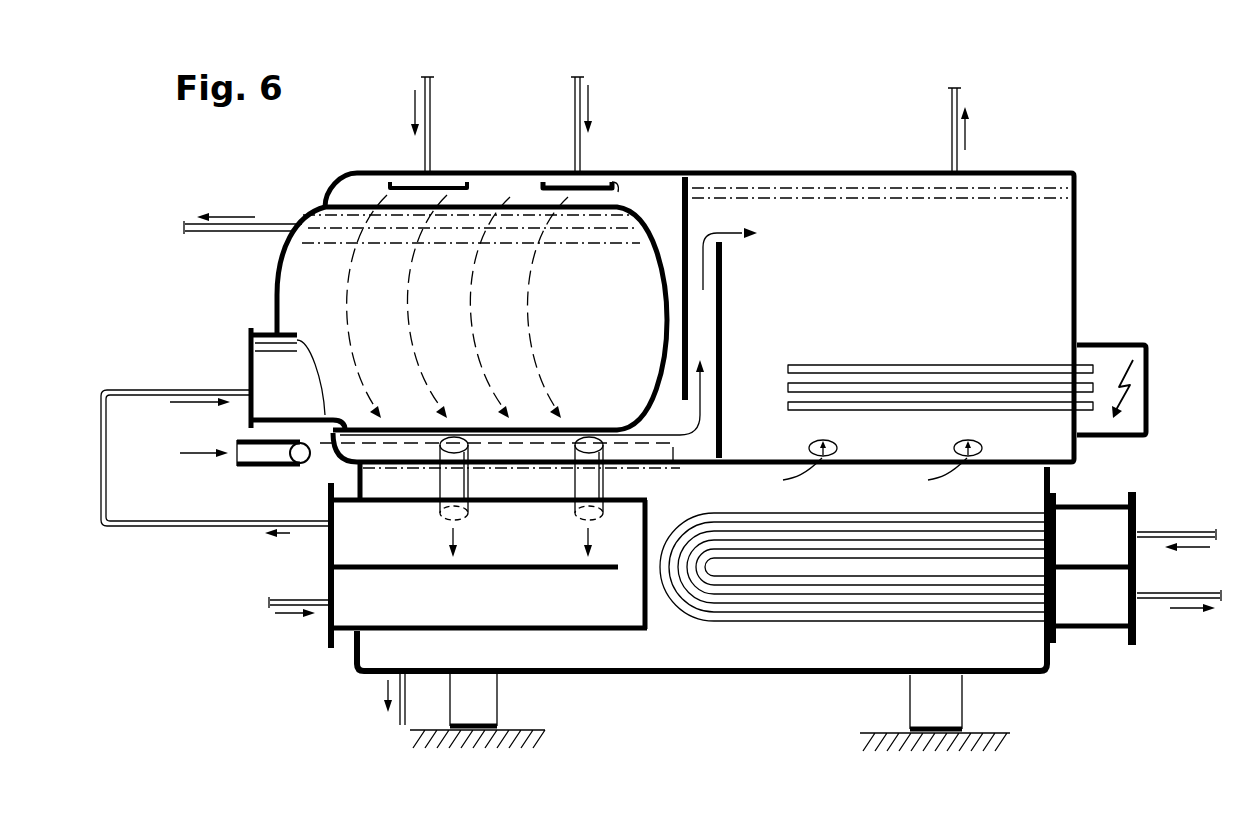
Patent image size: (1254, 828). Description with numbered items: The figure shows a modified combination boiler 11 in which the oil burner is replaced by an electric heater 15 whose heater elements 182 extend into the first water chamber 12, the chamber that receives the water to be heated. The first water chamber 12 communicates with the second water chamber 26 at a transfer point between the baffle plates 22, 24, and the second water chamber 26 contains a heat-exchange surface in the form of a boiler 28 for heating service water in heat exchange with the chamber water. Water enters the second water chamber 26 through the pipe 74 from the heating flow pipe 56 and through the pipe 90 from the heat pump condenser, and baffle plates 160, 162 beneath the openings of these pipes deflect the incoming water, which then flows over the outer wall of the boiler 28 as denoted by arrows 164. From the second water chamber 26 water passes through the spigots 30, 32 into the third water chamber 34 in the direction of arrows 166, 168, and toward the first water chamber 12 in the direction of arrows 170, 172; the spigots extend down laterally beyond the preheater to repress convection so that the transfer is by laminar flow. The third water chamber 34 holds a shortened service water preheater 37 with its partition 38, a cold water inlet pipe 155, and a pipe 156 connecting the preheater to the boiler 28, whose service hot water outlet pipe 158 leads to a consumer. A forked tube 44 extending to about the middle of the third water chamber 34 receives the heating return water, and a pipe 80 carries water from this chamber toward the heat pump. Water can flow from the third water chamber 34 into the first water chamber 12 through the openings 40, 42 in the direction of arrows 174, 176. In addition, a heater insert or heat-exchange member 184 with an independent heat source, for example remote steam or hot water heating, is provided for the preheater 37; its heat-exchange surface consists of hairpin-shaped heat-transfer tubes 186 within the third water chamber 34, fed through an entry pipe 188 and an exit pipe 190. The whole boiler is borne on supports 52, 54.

The combination boiler 11 is at (830, 147).
The first water chamber 12 is at (1012, 190).
The electric heater 15 is at (1110, 345).
The baffle plate 22 is at (682, 190).
The baffle plate 24 is at (725, 316).
The second water chamber 26 is at (503, 190).
The boiler 28 is at (293, 297).
The spigot 30 is at (468, 483).
The spigot 32 is at (603, 485).
The third water chamber 34 is at (645, 653).
The shortened service water preheater 37 is at (360, 610).
The partition 38 is at (517, 570).
The opening 40 is at (838, 447).
The opening 42 is at (983, 447).
The forked tube 44 is at (270, 458).
The support 52 is at (487, 700).
The support 54 is at (952, 707).
The heating flow pipe 56 is at (952, 103).
The pipe 74 is at (575, 97).
The pipe 80 is at (397, 722).
The pipe 90 is at (431, 94).
The inlet pipe 155 is at (280, 600).
The pipe 156 is at (143, 390).
The service hot water outlet pipe 158 is at (242, 235).
The baffle plate 160 is at (616, 193).
The baffle plate 162 is at (406, 185).
The arrows 164 is at (505, 335).
The arrow 166 is at (447, 537).
The arrow 168 is at (588, 537).
The arrow 170 is at (702, 403).
The arrow 172 is at (733, 237).
The arrow 174 is at (822, 458).
The arrow 176 is at (967, 458).
The heater elements 182 is at (912, 380).
The heat-exchange member 184 is at (1148, 511).
The hairpin-shaped heat-transfer tubes 186 is at (872, 592).
The entry pipe 188 is at (1158, 538).
The exit pipe 190 is at (1158, 600).